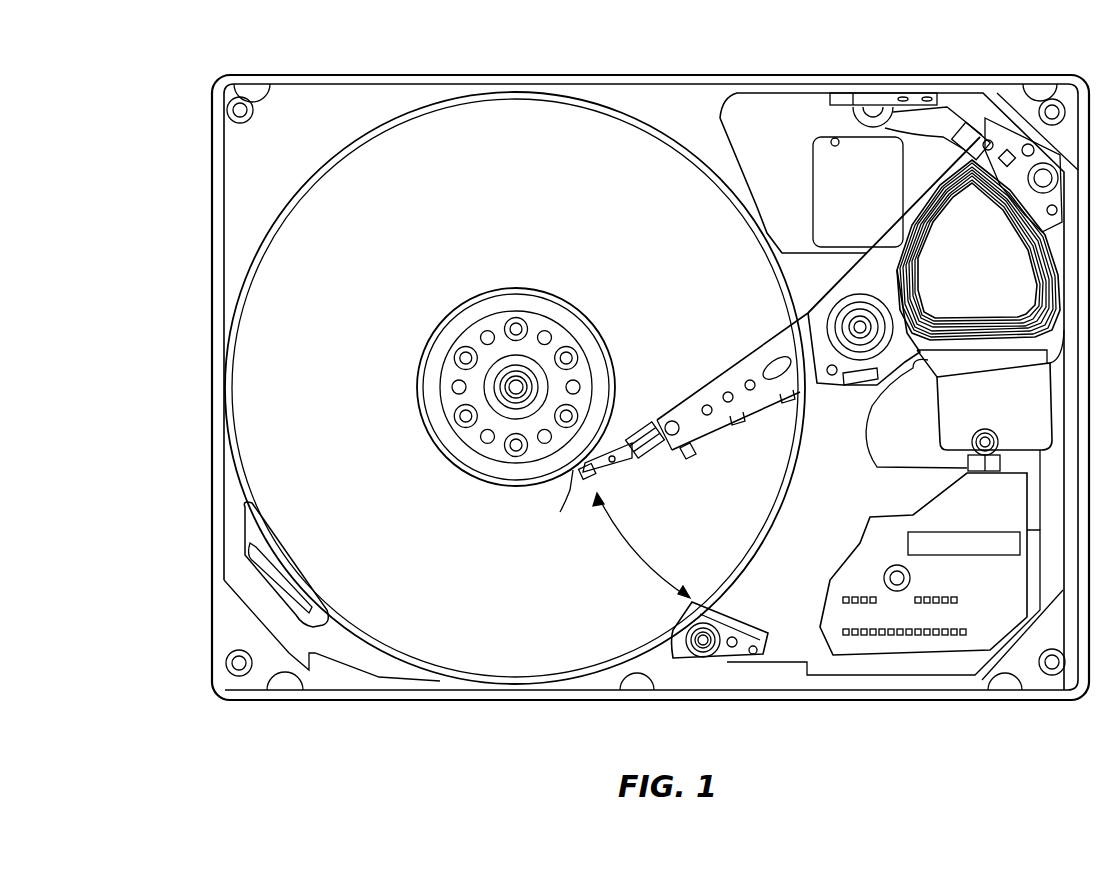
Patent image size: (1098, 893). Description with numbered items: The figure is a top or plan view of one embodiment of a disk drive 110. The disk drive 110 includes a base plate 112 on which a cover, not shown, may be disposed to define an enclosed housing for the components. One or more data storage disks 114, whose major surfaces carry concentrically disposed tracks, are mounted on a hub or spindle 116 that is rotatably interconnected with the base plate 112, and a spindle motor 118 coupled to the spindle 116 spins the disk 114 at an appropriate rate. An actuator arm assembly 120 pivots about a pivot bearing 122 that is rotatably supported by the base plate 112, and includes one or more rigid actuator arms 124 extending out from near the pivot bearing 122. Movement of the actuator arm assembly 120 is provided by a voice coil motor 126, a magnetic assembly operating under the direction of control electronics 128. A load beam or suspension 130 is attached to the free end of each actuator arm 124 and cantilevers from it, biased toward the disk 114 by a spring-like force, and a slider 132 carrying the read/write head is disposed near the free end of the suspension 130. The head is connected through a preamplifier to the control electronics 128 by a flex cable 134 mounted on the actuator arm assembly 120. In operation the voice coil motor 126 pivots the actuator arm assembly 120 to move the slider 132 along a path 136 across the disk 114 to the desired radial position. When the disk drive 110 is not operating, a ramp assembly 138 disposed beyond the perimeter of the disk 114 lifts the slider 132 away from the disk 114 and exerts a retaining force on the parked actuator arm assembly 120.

The disk drive 110 is at (148, 166).
The base plate 112 is at (403, 74).
The data storage disk 114 is at (528, 118).
The spindle 116 is at (545, 292).
The spindle motor 118 is at (492, 360).
The actuator arm assembly 120 is at (746, 349).
The pivot bearing 122 is at (855, 350).
The actuator arm 124 is at (720, 420).
The voice coil motor 126 is at (979, 229).
The control electronics 128 is at (905, 642).
The suspension 130 is at (630, 440).
The slider 132 is at (575, 503).
The flex cable 134 is at (870, 462).
The path 136 is at (627, 560).
The ramp assembly 138 is at (731, 658).